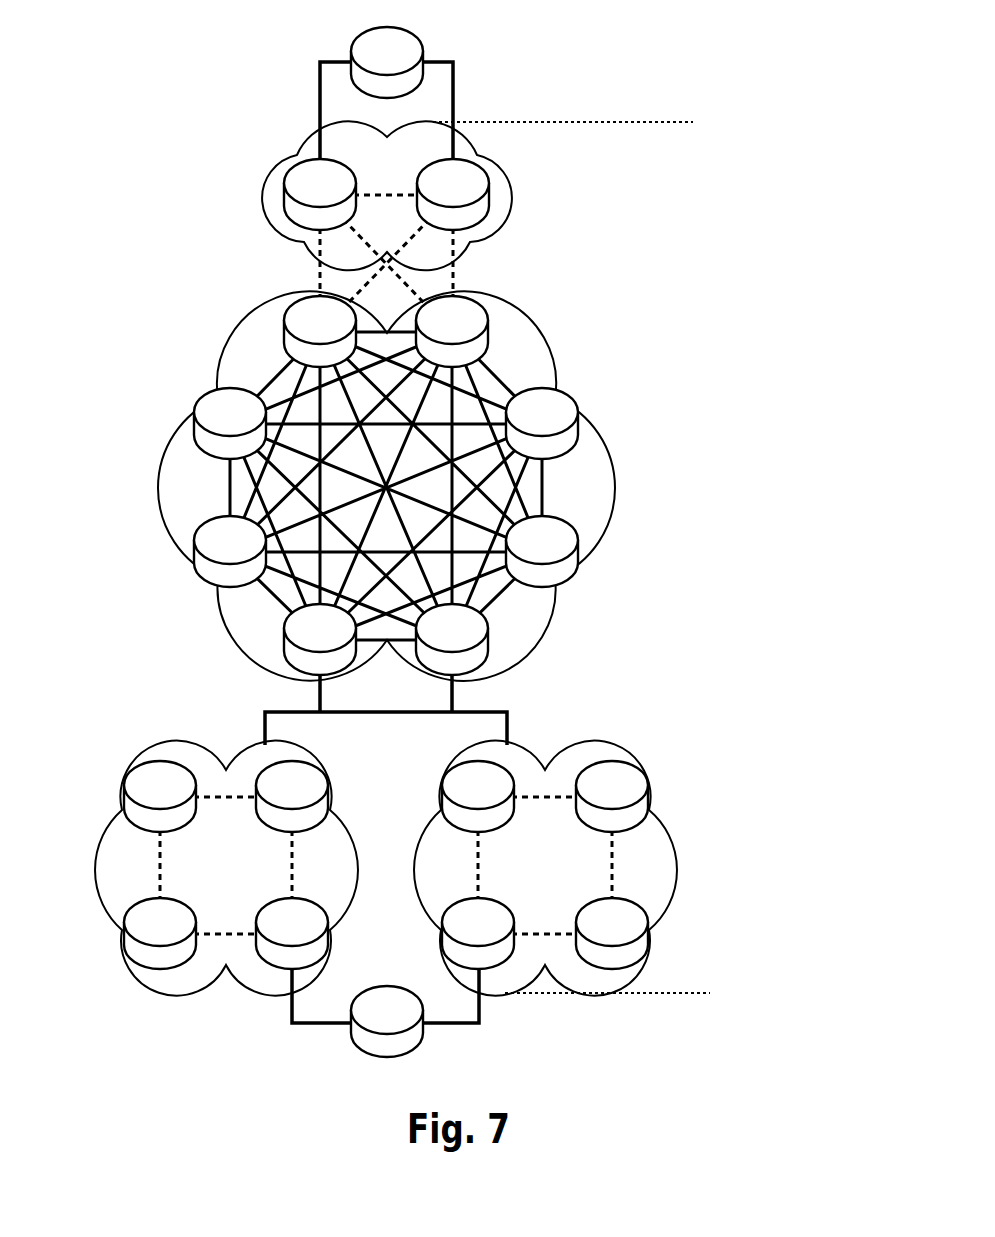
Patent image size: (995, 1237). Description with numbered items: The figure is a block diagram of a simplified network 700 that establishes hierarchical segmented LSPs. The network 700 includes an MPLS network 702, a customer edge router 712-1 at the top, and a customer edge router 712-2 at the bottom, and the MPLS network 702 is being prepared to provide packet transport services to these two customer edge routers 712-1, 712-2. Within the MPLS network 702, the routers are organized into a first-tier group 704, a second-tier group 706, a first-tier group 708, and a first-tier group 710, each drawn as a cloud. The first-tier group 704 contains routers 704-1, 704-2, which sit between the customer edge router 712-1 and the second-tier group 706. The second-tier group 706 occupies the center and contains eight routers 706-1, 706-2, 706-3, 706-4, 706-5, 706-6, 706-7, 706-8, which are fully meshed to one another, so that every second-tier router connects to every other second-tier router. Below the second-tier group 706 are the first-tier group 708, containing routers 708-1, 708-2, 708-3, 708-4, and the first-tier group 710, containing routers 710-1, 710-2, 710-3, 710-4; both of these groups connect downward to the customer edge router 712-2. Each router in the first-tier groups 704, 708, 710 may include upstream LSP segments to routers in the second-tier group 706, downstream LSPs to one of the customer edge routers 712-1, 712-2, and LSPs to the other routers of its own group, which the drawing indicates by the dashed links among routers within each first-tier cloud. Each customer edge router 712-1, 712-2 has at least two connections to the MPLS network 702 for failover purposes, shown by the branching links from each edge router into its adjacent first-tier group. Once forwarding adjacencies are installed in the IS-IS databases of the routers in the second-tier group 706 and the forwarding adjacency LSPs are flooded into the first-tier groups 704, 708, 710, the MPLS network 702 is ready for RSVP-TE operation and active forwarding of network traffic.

The network 700 is at (158, 72).
The MPLS network 702 is at (710, 993).
The tier 1 group 704 is at (262, 195).
The router 704-1 is at (320, 194).
The router 704-2 is at (453, 194).
The tier 2 group 706 is at (160, 487).
The router 706-1 is at (320, 331).
The router 706-2 is at (230, 423).
The router 706-3 is at (230, 551).
The router 706-4 is at (320, 639).
The router 706-5 is at (452, 639).
The router 706-6 is at (542, 551).
The router 706-7 is at (542, 423).
The router 706-8 is at (452, 331).
The tier 1 group 708 is at (187, 745).
The router 708-1 is at (160, 796).
The router 708-2 is at (292, 796).
The router 708-3 is at (160, 933).
The router 708-4 is at (292, 933).
The tier 1 group 710 is at (585, 745).
The router 710-1 is at (478, 796).
The router 710-2 is at (612, 796).
The router 710-3 is at (478, 933).
The router 710-4 is at (612, 933).
The customer edge router 712-1 is at (413, 94).
The customer edge router 712-2 is at (393, 1007).